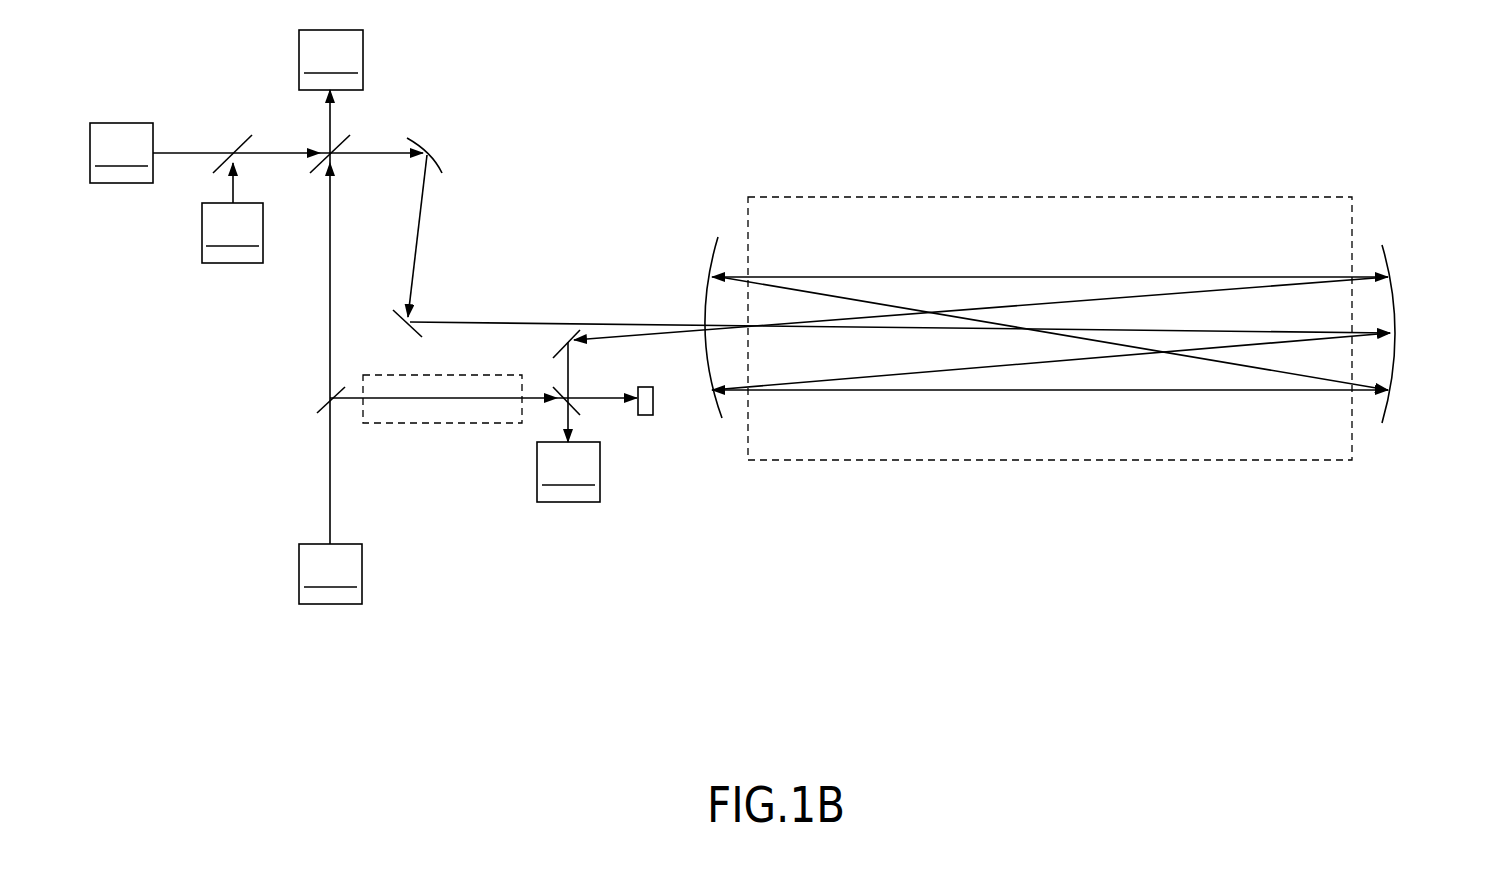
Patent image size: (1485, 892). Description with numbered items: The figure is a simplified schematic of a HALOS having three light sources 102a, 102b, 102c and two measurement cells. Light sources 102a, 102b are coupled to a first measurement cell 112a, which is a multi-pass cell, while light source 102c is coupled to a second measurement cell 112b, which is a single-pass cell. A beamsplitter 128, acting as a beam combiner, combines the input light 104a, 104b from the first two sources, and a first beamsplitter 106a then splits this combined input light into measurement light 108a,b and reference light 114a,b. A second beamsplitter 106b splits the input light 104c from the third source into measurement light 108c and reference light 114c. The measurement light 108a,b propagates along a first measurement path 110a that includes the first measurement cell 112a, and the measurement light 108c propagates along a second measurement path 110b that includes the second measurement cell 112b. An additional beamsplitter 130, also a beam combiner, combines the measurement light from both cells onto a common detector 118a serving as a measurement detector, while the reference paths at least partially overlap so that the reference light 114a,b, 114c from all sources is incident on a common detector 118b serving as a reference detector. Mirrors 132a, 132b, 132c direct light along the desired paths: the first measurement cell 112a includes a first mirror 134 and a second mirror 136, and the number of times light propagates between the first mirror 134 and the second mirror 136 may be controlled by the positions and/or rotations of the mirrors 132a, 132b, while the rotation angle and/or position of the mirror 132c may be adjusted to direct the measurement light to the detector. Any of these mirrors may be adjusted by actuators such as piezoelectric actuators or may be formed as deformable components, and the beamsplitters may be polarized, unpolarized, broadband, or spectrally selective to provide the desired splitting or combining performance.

The light source 102a is at (121, 153).
The light source 102b is at (232, 233).
The light source 102c is at (330, 574).
The input light 104a is at (190, 150).
The input light 104b is at (223, 185).
The input light 104c is at (331, 503).
The first beamsplitter 106a is at (345, 138).
The second beamsplitter 106b is at (325, 403).
The measurement light 108a,b is at (421, 255).
The measurement light 108c is at (540, 405).
The first measurement path 110a is at (547, 302).
The second measurement path 110b is at (449, 495).
The first measurement cell 112a is at (1034, 196).
The second measurement cell 112b is at (437, 424).
The reference light 114a,b is at (327, 128).
The reference light 114c is at (322, 313).
The common detector 118a is at (331, 60).
The common detector 118b is at (568, 472).
The beamsplitter 128 is at (248, 135).
The additional beamsplitter 130 is at (578, 406).
The mirror 132a is at (434, 153).
The mirror 132b is at (395, 308).
The mirror 132c is at (558, 352).
The first mirror 134 is at (1384, 250).
The second mirror 136 is at (717, 246).